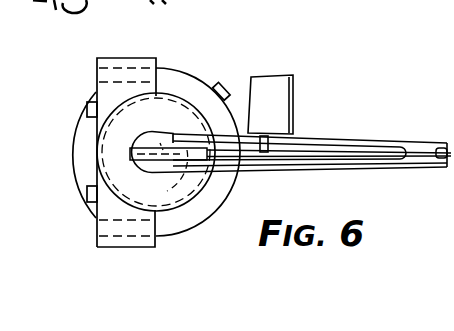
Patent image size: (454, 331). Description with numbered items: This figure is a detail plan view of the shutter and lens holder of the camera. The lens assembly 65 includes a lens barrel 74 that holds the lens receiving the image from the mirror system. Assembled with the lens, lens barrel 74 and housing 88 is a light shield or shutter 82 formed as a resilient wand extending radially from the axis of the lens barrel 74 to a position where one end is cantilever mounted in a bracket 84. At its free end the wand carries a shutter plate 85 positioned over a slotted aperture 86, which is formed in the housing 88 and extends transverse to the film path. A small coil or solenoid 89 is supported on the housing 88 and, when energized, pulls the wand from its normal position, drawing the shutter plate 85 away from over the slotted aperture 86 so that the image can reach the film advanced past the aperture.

The lens assembly 65 is at (166, 65).
The lens barrel 74 is at (78, 138).
The shutter 82 is at (363, 149).
The bracket 84 is at (418, 165).
The shutter plate 85 is at (172, 184).
The slotted aperture 86 is at (148, 146).
The housing 88 is at (328, 139).
The solenoid 89 is at (273, 93).